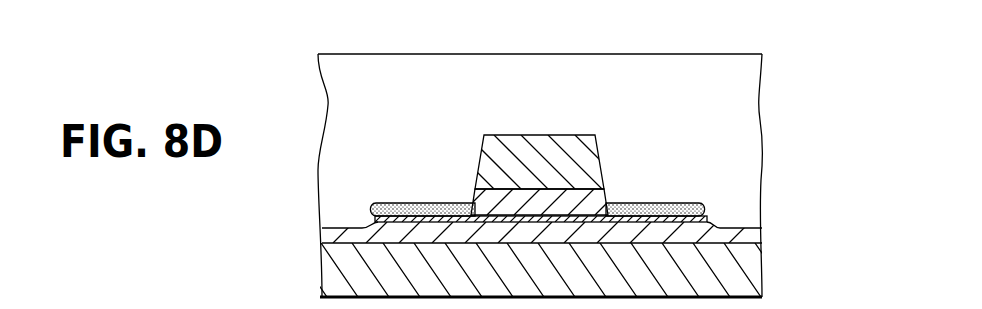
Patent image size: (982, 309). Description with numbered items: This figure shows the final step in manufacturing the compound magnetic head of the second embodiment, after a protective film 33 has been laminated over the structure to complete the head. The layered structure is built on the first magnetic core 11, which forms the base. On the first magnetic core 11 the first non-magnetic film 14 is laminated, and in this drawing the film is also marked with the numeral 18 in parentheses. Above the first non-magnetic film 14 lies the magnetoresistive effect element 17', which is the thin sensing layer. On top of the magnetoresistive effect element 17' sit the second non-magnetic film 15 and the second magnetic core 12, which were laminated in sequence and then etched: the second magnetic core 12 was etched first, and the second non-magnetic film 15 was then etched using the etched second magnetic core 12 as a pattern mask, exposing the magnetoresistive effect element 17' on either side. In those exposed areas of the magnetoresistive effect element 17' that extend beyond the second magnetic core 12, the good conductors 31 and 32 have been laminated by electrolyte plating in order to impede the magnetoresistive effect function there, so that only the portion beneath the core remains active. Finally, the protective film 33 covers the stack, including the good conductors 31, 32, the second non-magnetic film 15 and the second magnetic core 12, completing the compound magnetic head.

The first magnetic core 11 is at (740, 268).
The second magnetic core 12 is at (577, 148).
The first non-magnetic film 14 is at (745, 232).
The gate insulating film 18 is at (606, 236).
The second non-magnetic film 15 is at (595, 200).
The magnetoresistive effect element 17' is at (599, 206).
The good conductor 31 is at (393, 203).
The good conductor 32 is at (688, 202).
The protective film 33 is at (728, 101).